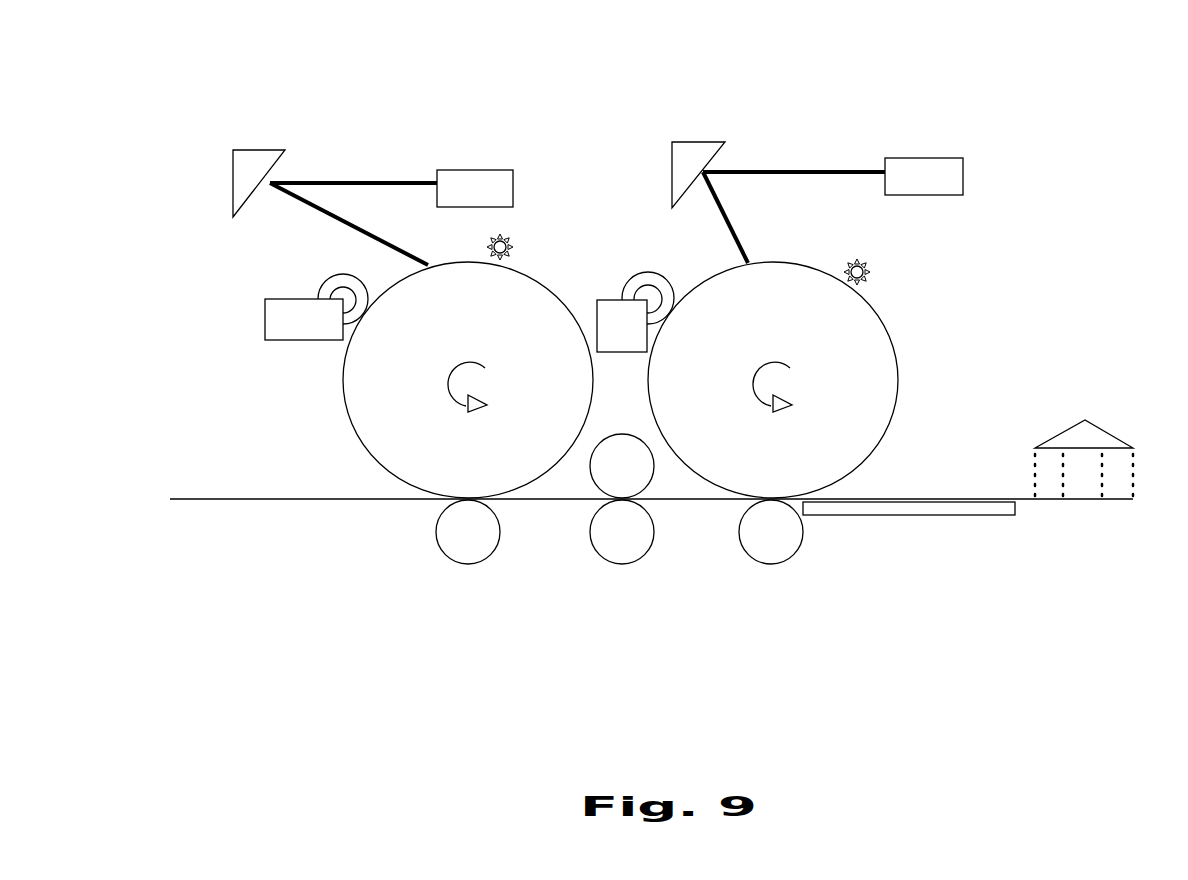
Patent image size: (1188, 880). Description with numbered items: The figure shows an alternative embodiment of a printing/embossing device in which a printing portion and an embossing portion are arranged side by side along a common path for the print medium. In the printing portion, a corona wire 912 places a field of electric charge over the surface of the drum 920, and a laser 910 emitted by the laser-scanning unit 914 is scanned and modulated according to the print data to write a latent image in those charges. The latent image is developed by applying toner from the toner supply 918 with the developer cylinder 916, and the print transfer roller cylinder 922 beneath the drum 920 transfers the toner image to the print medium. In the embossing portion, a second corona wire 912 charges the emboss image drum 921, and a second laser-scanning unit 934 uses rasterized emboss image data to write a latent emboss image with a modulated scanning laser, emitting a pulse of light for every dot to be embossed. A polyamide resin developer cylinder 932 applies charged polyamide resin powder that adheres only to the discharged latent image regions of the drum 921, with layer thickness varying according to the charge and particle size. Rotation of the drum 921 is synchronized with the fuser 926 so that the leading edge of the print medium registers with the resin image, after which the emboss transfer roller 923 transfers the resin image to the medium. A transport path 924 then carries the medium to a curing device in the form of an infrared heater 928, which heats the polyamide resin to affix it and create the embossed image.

The laser 910 is at (335, 218).
The corona wire 912 is at (508, 243).
The laser-scanning unit 914 is at (487, 168).
The developer cylinder 916 is at (318, 293).
The toner supply 918 is at (288, 340).
The drum 920 is at (355, 433).
The emboss image drum 921 is at (898, 380).
The print transfer roller cylinder 922 is at (438, 545).
The emboss transfer roller 923 is at (768, 563).
The transport path 924 is at (928, 517).
The fuser 926 is at (597, 552).
The infrared heater 928 is at (1102, 430).
The polyamide resin developer cylinder 932 is at (633, 250).
The laser-scanning unit 934 is at (925, 158).